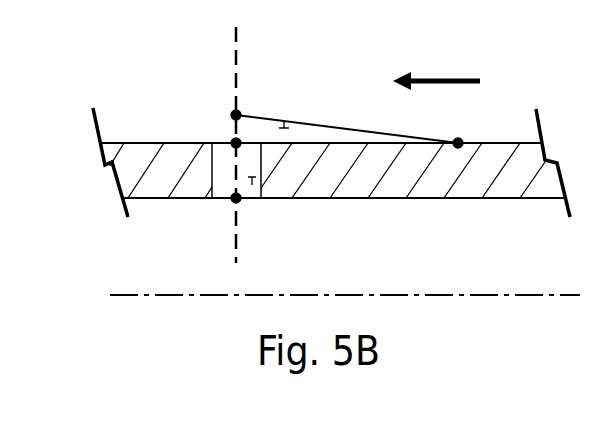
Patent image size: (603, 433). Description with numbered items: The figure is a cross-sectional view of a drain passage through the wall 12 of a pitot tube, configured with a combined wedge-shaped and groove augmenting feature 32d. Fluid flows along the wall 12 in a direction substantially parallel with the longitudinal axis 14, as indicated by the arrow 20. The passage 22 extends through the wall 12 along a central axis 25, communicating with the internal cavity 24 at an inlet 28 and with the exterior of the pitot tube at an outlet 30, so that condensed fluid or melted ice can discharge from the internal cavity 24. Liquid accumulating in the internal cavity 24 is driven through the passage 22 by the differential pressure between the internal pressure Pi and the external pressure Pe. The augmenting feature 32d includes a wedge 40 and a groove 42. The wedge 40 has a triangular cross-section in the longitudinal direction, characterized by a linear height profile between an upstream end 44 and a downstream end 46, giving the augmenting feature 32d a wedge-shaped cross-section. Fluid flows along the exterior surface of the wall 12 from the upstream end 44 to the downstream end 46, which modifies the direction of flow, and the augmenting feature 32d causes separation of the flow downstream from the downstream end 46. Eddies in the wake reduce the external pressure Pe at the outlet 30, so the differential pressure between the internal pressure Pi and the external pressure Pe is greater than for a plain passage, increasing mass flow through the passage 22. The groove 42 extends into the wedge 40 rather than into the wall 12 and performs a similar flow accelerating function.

The wall 12 is at (125, 123).
The longitudinal axis 14 is at (138, 295).
The arrow 20 is at (447, 81).
The passage 22 is at (252, 185).
The internal cavity 24 is at (409, 261).
The central axis 25 is at (237, 52).
The inlet 28 is at (248, 218).
The outlet 30 is at (220, 93).
The augmenting feature 32d is at (379, 103).
The wedge 40 is at (325, 125).
The groove 42 is at (285, 125).
The upstream end 44 is at (467, 130).
The downstream end 46 is at (245, 106).
The external pressure Pe is at (236, 143).
The internal pressure Pi is at (236, 199).